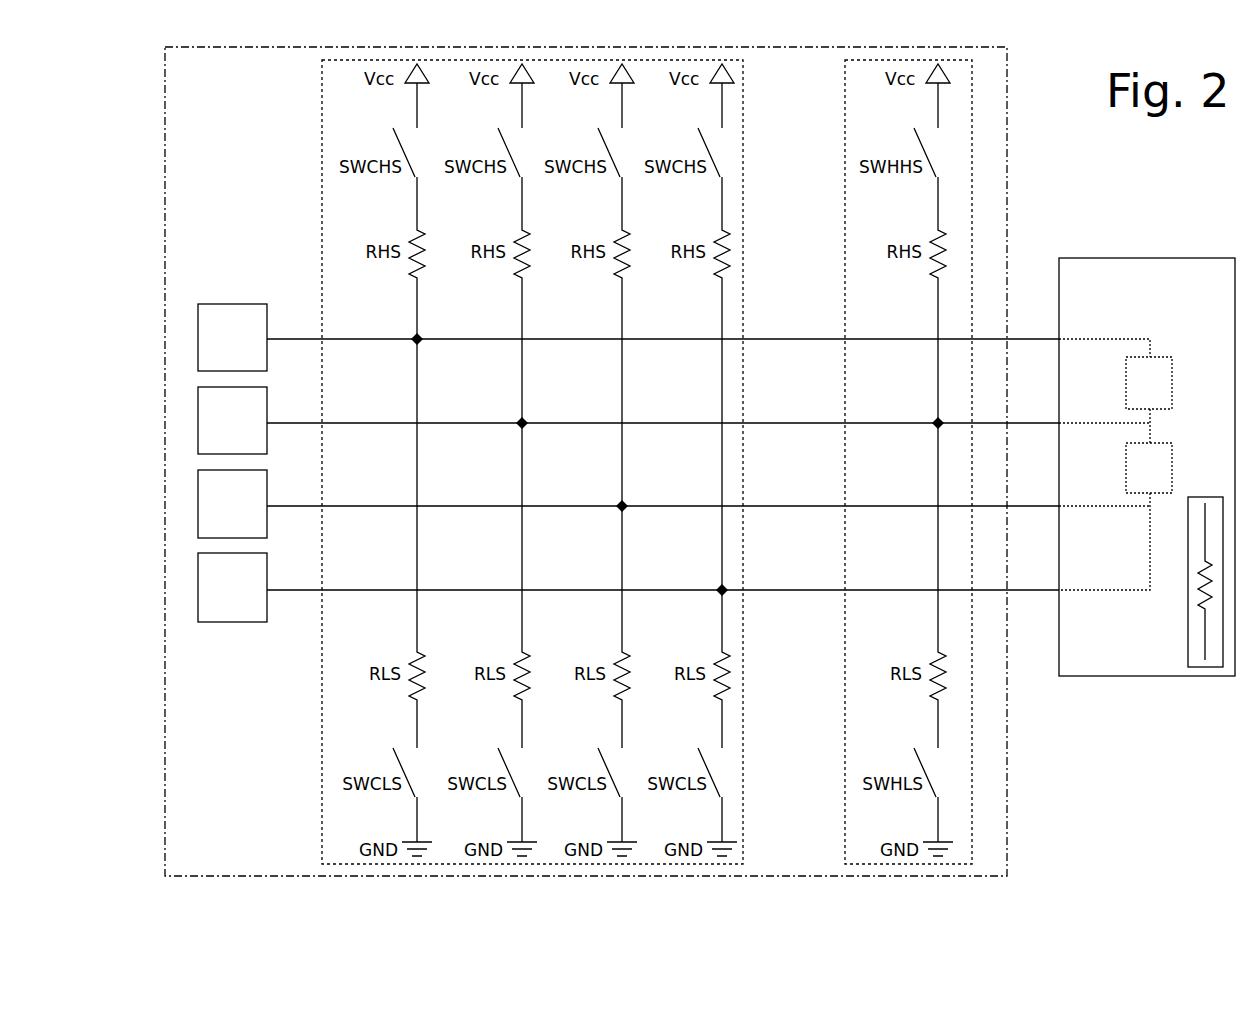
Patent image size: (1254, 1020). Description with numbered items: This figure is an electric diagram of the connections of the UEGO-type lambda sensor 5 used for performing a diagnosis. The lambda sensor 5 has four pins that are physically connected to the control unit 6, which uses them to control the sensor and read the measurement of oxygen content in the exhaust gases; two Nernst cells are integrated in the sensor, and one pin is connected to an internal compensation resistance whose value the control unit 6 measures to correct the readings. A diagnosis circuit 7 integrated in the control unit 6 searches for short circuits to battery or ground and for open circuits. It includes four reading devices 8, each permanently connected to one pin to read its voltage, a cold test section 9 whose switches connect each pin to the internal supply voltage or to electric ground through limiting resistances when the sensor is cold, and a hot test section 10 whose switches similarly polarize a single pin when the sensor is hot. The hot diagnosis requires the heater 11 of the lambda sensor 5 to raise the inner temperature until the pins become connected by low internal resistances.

The lambda sensor 5 is at (1157, 240).
The control unit 6 is at (1112, 765).
The diagnosis circuit 7 is at (1046, 808).
The reading device 8 is at (232, 463).
The cold test section 9 is at (296, 798).
The hot test section 10 is at (992, 181).
The heater 11 is at (1193, 653).